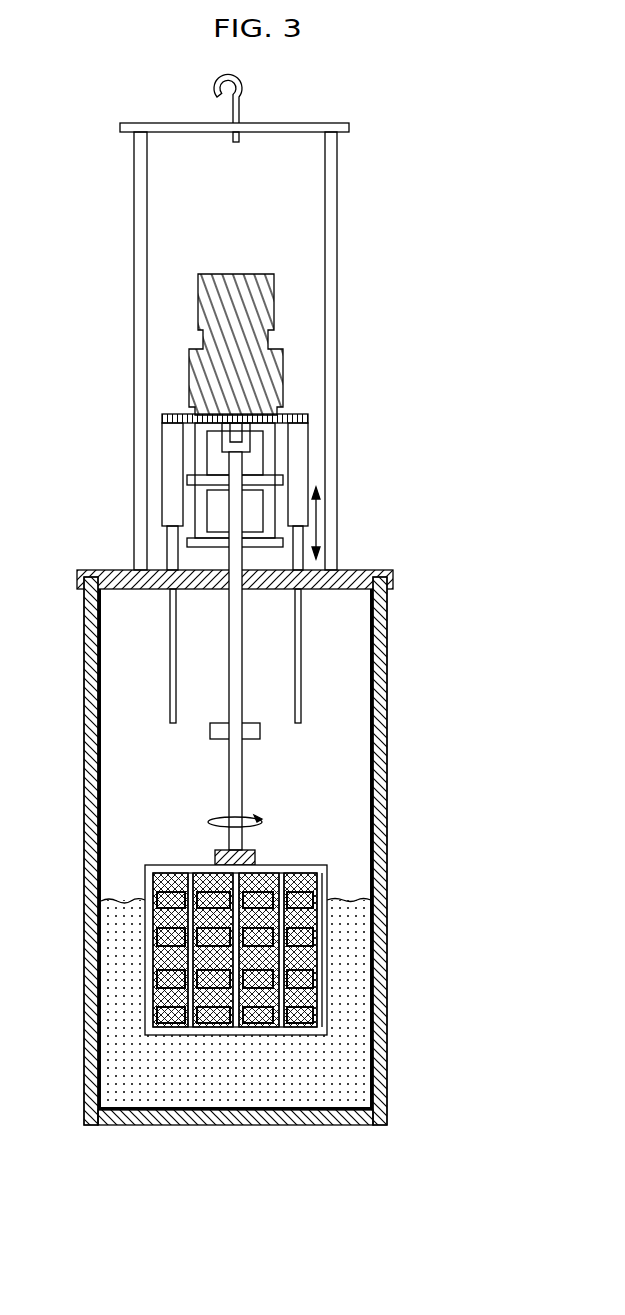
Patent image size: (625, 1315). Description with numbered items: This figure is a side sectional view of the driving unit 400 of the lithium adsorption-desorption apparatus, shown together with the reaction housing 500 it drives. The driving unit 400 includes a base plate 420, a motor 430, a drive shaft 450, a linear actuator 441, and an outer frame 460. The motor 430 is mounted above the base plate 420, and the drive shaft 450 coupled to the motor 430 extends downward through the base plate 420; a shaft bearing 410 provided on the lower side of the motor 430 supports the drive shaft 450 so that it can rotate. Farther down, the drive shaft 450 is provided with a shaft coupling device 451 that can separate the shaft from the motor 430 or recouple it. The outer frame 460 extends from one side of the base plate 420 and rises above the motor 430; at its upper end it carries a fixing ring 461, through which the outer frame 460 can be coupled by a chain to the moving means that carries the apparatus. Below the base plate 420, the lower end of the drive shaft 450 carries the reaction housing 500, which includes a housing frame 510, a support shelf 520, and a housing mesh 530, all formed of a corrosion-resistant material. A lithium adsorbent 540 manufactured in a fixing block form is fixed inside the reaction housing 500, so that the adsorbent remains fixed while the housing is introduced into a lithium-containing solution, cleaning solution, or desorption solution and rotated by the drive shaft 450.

The driving unit 400 is at (229, 344).
The shaft bearing 410 is at (190, 481).
The base plate 420 is at (363, 577).
The motor 430 is at (207, 378).
The linear actuator 441 is at (175, 438).
The drive shaft 450 is at (235, 557).
The shaft coupling device 451 is at (254, 733).
The outer frame 460 is at (331, 168).
The fixing ring 461 is at (243, 90).
The reaction housing 500 is at (304, 920).
The housing frame 510 is at (280, 918).
The support shelf 520 is at (317, 953).
The housing mesh 530 is at (317, 985).
The lithium adsorbent 540 is at (317, 938).